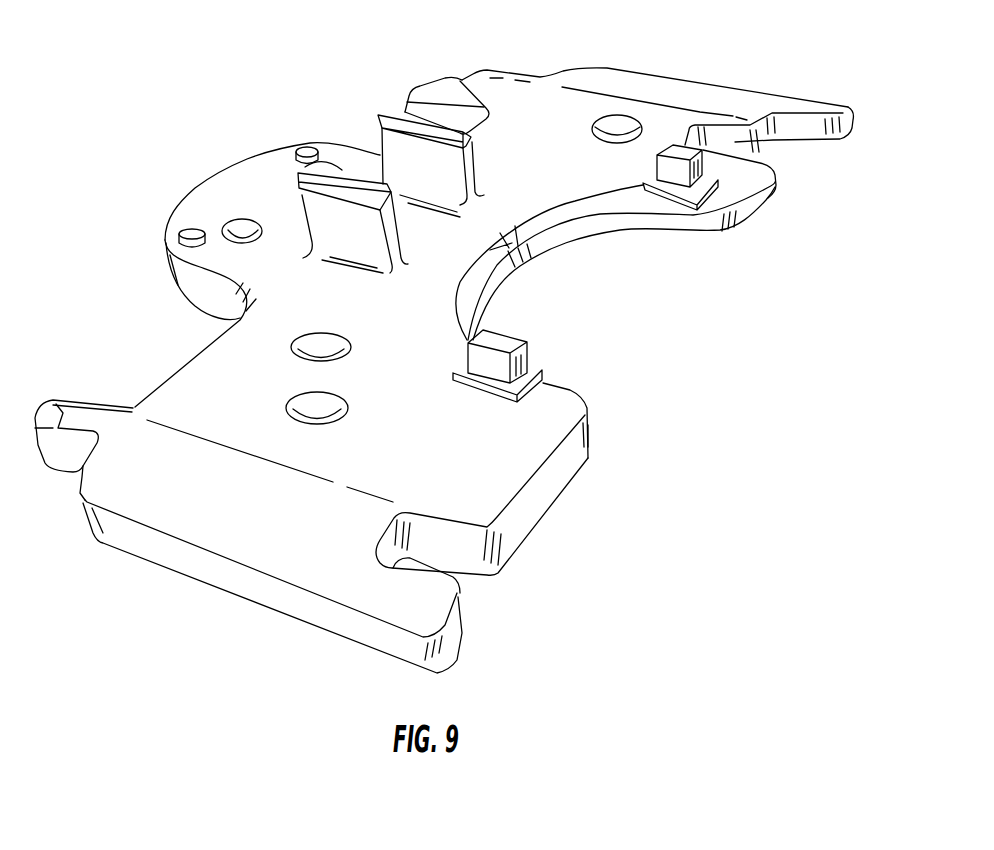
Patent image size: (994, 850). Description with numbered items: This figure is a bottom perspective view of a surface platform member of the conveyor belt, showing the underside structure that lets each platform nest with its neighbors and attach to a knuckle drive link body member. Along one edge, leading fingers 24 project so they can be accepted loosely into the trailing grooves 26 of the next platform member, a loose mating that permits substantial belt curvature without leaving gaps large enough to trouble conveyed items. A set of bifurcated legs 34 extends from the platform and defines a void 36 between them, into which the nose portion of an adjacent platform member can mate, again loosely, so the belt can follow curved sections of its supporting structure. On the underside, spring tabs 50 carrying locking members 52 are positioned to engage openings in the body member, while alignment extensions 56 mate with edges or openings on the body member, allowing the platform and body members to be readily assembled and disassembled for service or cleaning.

The leading fingers 24 is at (430, 80).
The trailing grooves 26 is at (737, 142).
The bifurcated legs 34 is at (518, 475).
The void 36 is at (518, 268).
The spring tabs 50 is at (387, 243).
The locking members 52 is at (317, 188).
The alignment extensions 56 is at (468, 357).